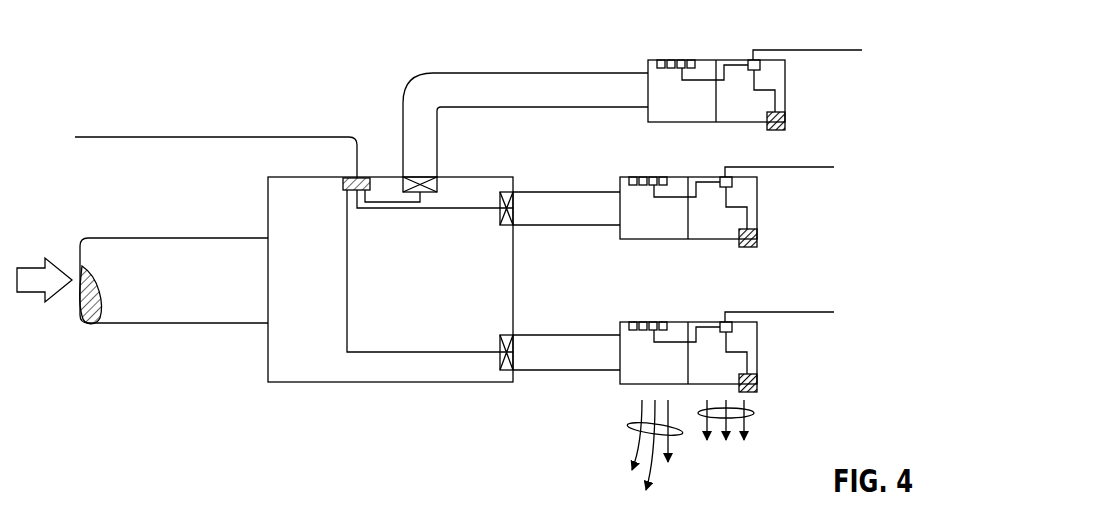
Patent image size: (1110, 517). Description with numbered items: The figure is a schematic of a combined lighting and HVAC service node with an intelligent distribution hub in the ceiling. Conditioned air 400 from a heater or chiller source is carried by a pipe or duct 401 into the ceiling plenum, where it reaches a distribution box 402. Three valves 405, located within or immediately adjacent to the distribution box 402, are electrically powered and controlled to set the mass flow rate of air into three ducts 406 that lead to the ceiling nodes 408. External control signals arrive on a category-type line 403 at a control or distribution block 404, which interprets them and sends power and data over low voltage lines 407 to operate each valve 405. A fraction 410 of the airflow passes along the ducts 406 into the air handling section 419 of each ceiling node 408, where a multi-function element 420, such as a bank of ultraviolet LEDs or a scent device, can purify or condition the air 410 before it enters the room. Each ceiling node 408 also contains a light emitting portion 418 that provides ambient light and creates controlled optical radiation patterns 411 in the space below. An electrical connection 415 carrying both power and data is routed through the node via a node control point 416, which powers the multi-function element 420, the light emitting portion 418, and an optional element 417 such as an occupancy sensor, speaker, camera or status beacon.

The conditioned air 400 is at (34, 294).
The pipe or duct 401 is at (180, 323).
The distribution box 402 is at (302, 382).
The line 403 is at (135, 138).
The control or distribution block 404 is at (343, 186).
The valve 405 is at (437, 184).
The duct 406 is at (490, 73).
The low voltage line 407 is at (367, 353).
The ceiling node 408 is at (712, 60).
The airflow fraction 410 is at (637, 427).
The controlled optical radiation patterns 411 is at (755, 414).
The electrical connection 415 is at (848, 50).
The node control point 416 is at (761, 65).
The optional element 417 is at (785, 122).
The light emitting portion 418 is at (737, 82).
The air handling section 419 is at (702, 116).
The multi-function element 420 is at (650, 62).